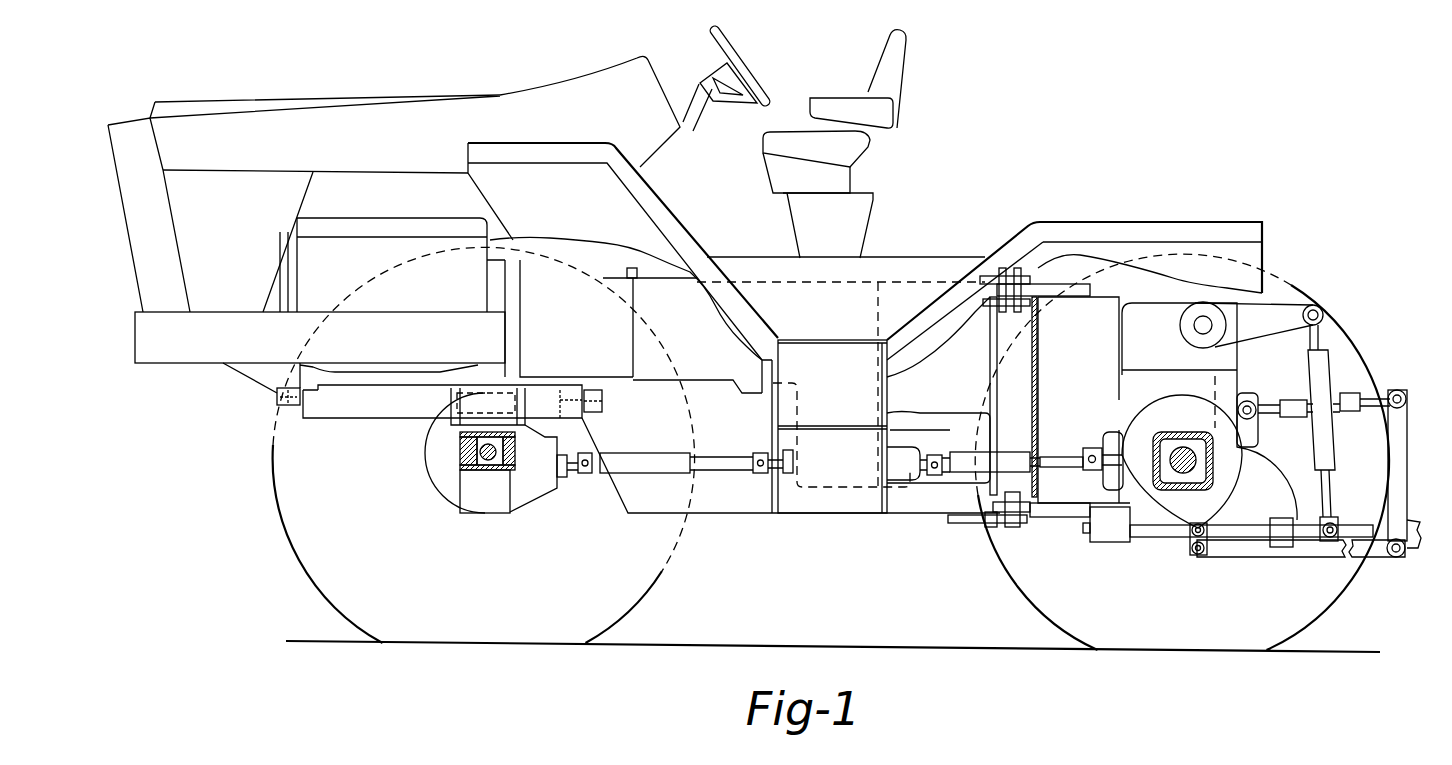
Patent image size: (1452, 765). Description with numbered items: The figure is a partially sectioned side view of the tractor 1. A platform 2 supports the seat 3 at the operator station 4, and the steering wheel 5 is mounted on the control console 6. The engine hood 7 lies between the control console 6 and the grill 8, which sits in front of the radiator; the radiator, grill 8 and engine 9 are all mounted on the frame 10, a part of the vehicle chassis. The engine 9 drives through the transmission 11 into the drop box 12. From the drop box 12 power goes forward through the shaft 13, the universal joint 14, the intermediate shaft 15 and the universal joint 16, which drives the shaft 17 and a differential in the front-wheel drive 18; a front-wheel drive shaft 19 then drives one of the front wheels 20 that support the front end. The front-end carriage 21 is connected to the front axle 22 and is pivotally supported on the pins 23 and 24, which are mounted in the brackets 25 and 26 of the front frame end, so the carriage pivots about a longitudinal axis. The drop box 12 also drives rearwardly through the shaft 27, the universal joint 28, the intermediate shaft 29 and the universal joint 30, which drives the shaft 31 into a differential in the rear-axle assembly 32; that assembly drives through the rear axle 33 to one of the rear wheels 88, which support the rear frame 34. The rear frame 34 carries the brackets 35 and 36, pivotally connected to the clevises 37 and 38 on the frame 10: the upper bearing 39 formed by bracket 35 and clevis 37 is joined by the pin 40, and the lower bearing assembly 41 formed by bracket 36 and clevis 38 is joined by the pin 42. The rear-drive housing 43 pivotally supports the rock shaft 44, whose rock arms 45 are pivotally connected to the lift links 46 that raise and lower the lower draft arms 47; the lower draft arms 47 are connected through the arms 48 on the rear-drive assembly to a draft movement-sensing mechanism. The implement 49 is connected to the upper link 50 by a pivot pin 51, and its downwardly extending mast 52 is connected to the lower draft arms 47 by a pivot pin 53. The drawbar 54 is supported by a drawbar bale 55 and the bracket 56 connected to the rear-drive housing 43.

The tractor 1 is at (1073, 221).
The platform 2 is at (894, 258).
The seat 3 is at (876, 143).
The operator station 4 is at (784, 90).
The steering wheel 5 is at (727, 48).
The control console 6 is at (649, 57).
The engine hood 7 is at (441, 96).
The grill 8 is at (122, 125).
The engine 9 is at (389, 218).
The frame 10 is at (172, 358).
The transmission 11 is at (673, 379).
The drop box 12 is at (832, 513).
The shaft 13 is at (783, 463).
The universal joint 14 is at (758, 452).
The intermediate shaft 15 is at (640, 455).
The universal joint 16 is at (590, 478).
The shaft 17 is at (565, 482).
The front-wheel drive 18 is at (460, 514).
The front-wheel drive shaft 19 is at (473, 447).
The front wheel 20 is at (291, 537).
The front-end carriage 21 is at (361, 413).
The front axle 22 is at (433, 480).
The pin 23 is at (613, 378).
The pin 24 is at (275, 397).
The bracket 25 is at (590, 388).
The bracket 26 is at (280, 407).
The shaft 27 is at (917, 430).
The universal joint 28 is at (935, 478).
The intermediate shaft 29 is at (960, 452).
The universal joint 30 is at (1088, 448).
The shaft 31 is at (1090, 470).
The rear-axle assembly 32 is at (1130, 440).
The rear axle 33 is at (1183, 472).
The rear frame 34 is at (1116, 290).
The bracket 35 is at (1060, 297).
The bracket 36 is at (1063, 517).
The clevis 37 is at (988, 312).
The clevis 38 is at (955, 523).
The upper bearing 39 is at (1035, 270).
The pin 40 is at (1003, 285).
The lower bearing assembly 41 is at (991, 524).
The pin 42 is at (1012, 527).
The rear-drive housing 43 is at (1120, 385).
The rock shaft 44 is at (1180, 325).
The rock arm 45 is at (1287, 305).
The lift link 46 is at (1308, 360).
The lower draft arm 47 is at (1235, 557).
The pivot 48 is at (1190, 540).
The implement 49 is at (1410, 557).
The upper link 50 is at (1287, 400).
The pivot pin 51 is at (1397, 390).
The mast 52 is at (1387, 440).
The pivot pin 53 is at (1391, 557).
The drawbar 54 is at (1155, 537).
The drawbar bale 55 is at (1282, 548).
The bracket 56 is at (1110, 543).
The rear wheel 88 is at (1038, 618).